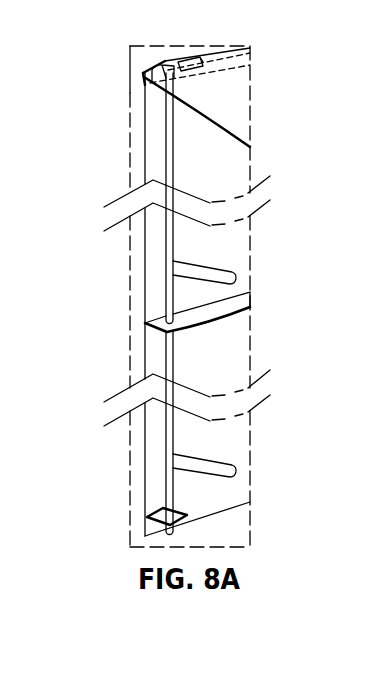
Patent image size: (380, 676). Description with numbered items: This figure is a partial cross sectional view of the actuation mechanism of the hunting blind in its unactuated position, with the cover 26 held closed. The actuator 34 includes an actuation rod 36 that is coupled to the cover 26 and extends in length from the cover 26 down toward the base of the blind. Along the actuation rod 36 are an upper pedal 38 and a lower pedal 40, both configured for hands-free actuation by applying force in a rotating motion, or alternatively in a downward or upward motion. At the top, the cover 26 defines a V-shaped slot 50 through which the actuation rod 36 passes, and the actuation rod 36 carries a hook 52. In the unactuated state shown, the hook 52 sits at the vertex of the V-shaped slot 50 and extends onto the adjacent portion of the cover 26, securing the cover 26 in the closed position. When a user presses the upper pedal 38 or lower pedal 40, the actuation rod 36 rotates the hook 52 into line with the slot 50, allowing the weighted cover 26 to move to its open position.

The cover 26 is at (228, 107).
The actuator 34 is at (140, 247).
The actuation rod 36 is at (166, 140).
The upper pedal 38 is at (230, 264).
The lower pedal 40 is at (230, 462).
The slot 50 is at (160, 63).
The hook 52 is at (187, 67).